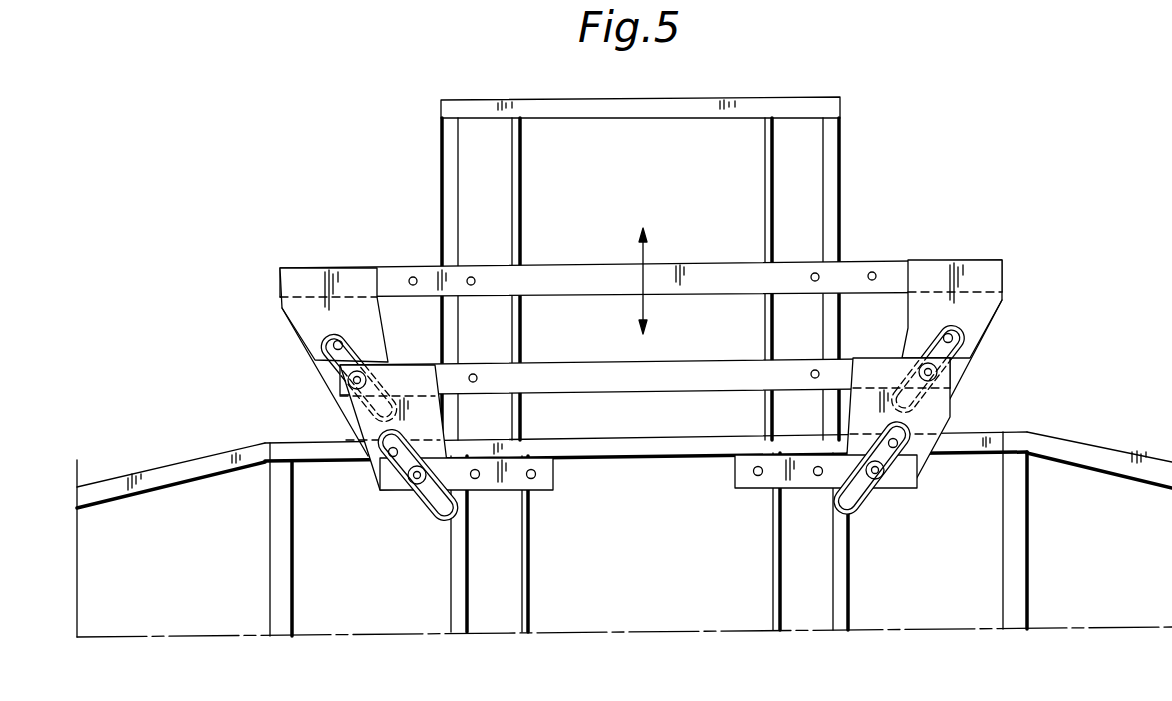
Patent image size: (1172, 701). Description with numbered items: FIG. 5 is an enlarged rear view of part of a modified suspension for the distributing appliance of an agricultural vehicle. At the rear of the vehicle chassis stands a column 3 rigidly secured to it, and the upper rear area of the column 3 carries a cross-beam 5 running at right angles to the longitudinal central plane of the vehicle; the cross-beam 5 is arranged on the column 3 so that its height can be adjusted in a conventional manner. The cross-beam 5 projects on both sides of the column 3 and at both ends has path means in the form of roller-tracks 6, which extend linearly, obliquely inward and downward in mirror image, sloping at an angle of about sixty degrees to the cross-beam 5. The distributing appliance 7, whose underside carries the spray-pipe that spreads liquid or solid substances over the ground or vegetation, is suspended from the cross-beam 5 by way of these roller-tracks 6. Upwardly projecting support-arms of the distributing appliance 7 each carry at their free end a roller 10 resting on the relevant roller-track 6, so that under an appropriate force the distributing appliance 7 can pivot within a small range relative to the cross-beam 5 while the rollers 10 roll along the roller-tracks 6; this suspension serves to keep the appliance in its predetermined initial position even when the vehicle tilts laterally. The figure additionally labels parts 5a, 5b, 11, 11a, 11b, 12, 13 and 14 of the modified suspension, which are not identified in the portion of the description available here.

The column 3 is at (838, 182).
The cross-beam 5 is at (700, 276).
The left bracket of upper cross bar 5a is at (300, 308).
The right bracket of upper cross bar 5b is at (985, 308).
The roller-track 6 is at (314, 358).
The distributing appliance 7 is at (154, 466).
The roller 10 is at (349, 383).
The lower cross bar 11 is at (706, 372).
The left bracket of lower cross bar 11a is at (356, 426).
The right bracket of lower cross bar 11b is at (953, 416).
The securing bolt 12 is at (350, 352).
The mounting plate 13 is at (552, 492).
The mounting hole 14 is at (477, 479).